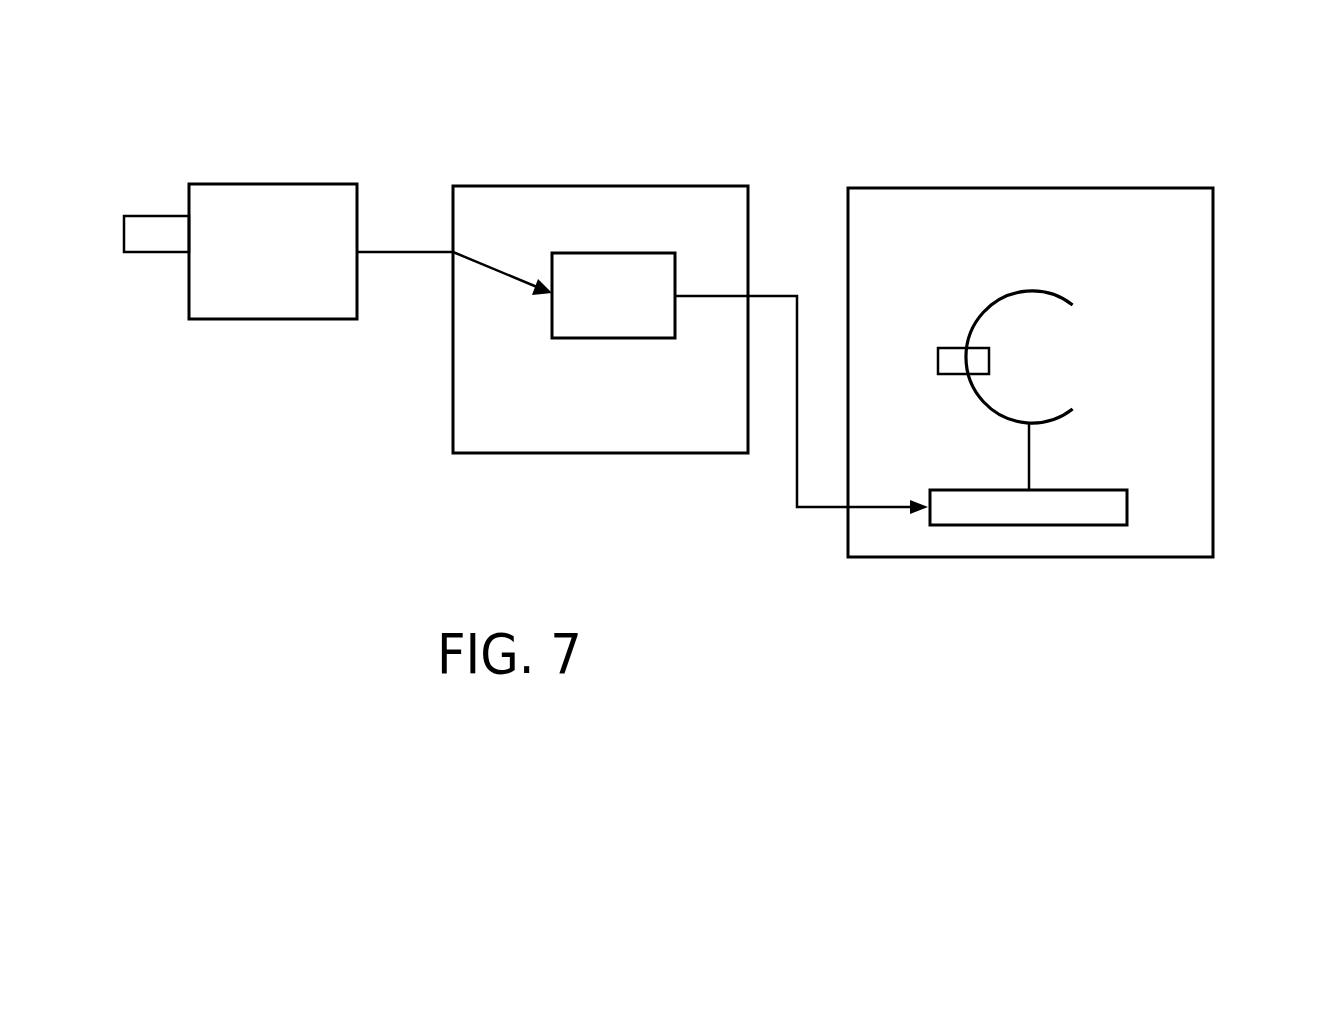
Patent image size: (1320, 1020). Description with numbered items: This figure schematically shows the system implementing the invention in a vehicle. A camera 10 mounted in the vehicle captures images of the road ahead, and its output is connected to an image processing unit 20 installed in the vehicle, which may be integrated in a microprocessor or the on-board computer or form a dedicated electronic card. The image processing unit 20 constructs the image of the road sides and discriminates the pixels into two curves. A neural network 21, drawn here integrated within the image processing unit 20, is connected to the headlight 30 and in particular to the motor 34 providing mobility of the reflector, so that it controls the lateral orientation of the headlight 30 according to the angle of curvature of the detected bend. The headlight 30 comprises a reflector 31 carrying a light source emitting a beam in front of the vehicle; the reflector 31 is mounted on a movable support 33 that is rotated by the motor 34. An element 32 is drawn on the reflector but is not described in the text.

The camera 10 is at (289, 217).
The image processing unit 20 is at (684, 222).
The neural network 21 is at (564, 295).
The headlight 30 is at (1146, 225).
The reflector 31 is at (1004, 298).
The carriage element 32 is at (980, 365).
The movable support 33 is at (1032, 457).
The motor 34 is at (1057, 505).